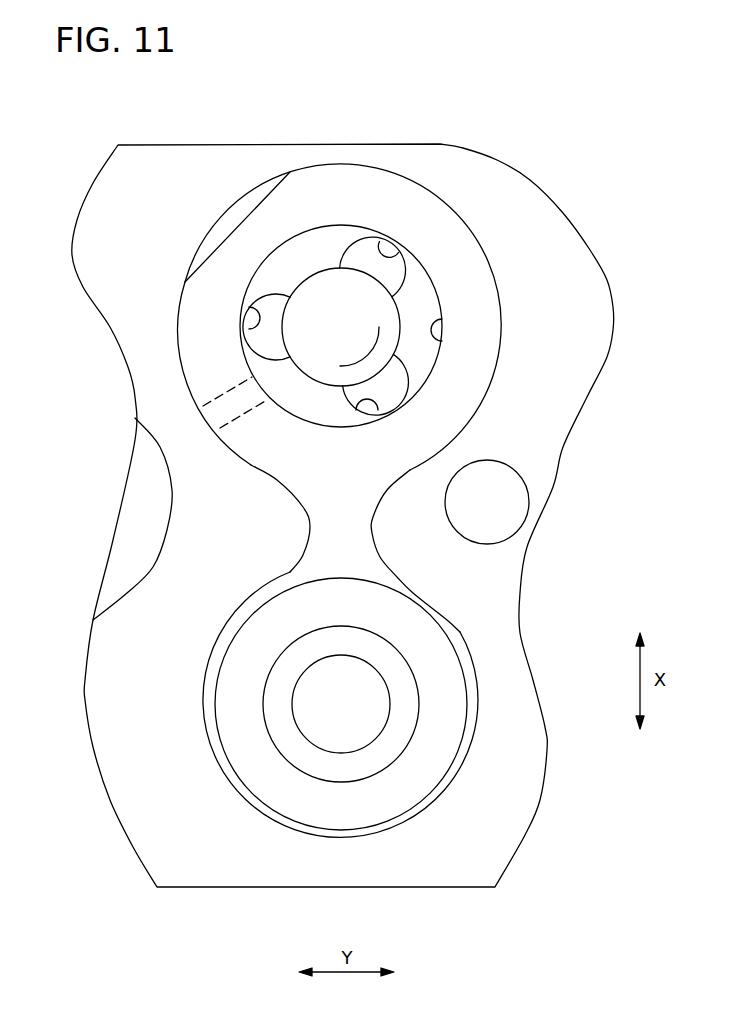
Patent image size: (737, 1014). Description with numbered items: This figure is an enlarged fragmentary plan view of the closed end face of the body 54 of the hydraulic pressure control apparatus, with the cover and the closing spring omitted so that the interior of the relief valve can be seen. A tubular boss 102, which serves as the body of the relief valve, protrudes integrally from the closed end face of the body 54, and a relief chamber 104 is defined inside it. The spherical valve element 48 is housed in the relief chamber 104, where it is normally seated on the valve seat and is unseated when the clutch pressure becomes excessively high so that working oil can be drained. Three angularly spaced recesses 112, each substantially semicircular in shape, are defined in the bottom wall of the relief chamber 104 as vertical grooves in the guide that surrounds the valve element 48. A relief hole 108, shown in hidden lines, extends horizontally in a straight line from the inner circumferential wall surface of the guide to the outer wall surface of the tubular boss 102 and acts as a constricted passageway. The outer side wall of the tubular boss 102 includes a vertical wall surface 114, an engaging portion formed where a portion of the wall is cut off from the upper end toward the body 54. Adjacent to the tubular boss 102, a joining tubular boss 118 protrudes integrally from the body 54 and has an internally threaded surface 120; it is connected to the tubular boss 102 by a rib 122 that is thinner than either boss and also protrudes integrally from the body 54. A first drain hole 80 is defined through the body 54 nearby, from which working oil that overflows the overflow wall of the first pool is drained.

The body 54 is at (105, 193).
The vertical wall surface 114 is at (255, 208).
The spherical valve element 48 is at (318, 298).
The recesses 112 is at (377, 250).
The tubular boss 102 is at (457, 255).
The relief chamber 104 is at (441, 337).
The relief hole 108 is at (204, 418).
The rib 122 is at (328, 532).
The first drain hole 80 is at (522, 530).
The internally threaded surface 120 is at (337, 780).
The joining tubular boss 118 is at (447, 770).